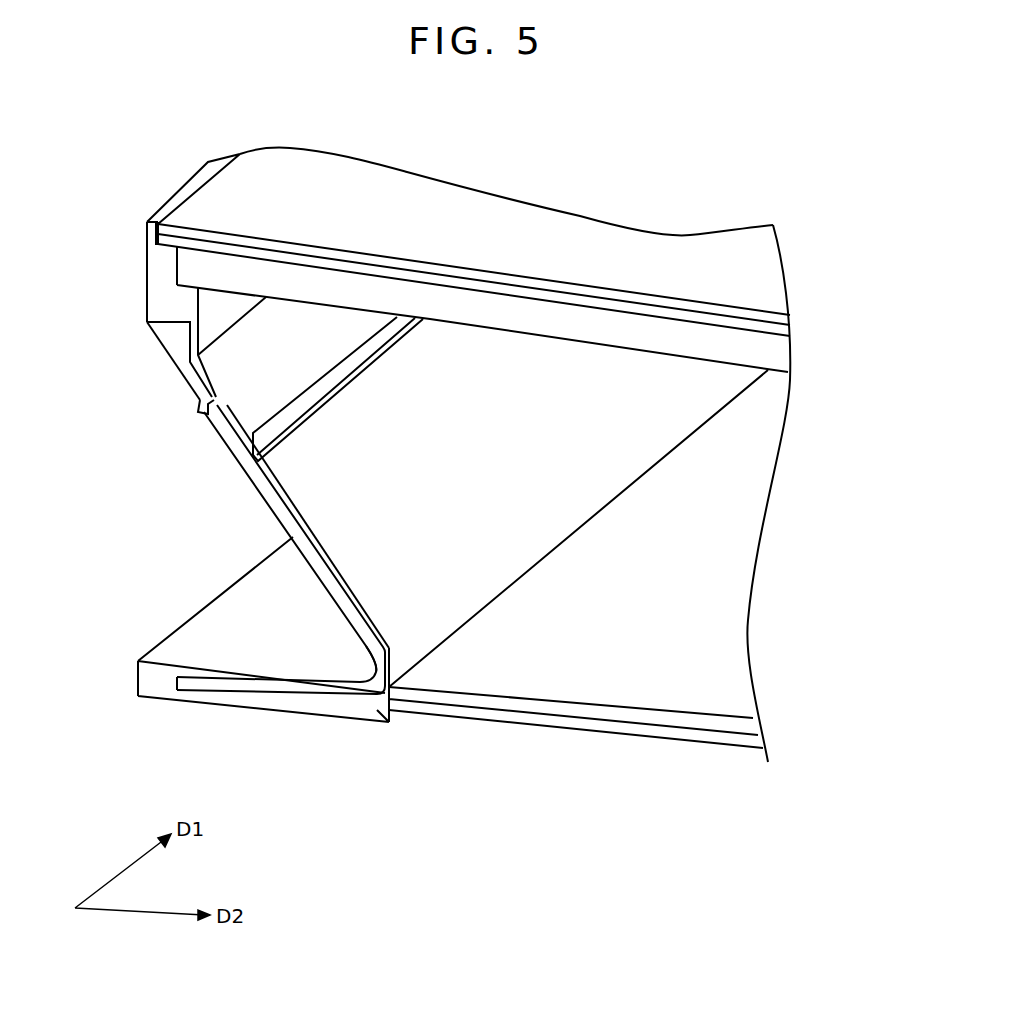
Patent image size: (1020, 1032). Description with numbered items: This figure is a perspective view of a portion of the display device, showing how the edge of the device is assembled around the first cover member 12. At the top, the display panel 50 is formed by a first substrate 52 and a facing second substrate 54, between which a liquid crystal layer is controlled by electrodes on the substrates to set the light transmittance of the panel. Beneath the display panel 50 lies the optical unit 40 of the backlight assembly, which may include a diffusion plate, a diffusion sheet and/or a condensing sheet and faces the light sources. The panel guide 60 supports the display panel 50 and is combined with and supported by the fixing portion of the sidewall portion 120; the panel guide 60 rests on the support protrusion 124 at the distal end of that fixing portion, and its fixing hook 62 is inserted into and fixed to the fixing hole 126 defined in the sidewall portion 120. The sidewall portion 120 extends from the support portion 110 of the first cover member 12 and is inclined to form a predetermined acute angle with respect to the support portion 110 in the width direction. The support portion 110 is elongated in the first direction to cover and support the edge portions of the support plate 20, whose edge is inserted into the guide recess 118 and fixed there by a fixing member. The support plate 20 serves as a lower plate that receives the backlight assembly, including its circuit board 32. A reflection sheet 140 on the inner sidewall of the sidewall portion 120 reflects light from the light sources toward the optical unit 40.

The first cover member 12 is at (398, 578).
The support plate 20 is at (640, 735).
The circuit board 32 is at (720, 727).
The optical unit 40 is at (785, 358).
The display panel 50 is at (527, 455).
The first substrate 52 is at (790, 336).
The second substrate 54 is at (790, 316).
The panel guide 60 is at (167, 318).
The fixing hook 62 is at (205, 414).
The support portion 110 is at (417, 578).
The guide recess 118 is at (308, 706).
The sidewall portion 120 is at (270, 511).
The support protrusion 124 is at (163, 347).
The fixing hole 126 is at (200, 400).
The reflection sheet 140 is at (389, 650).